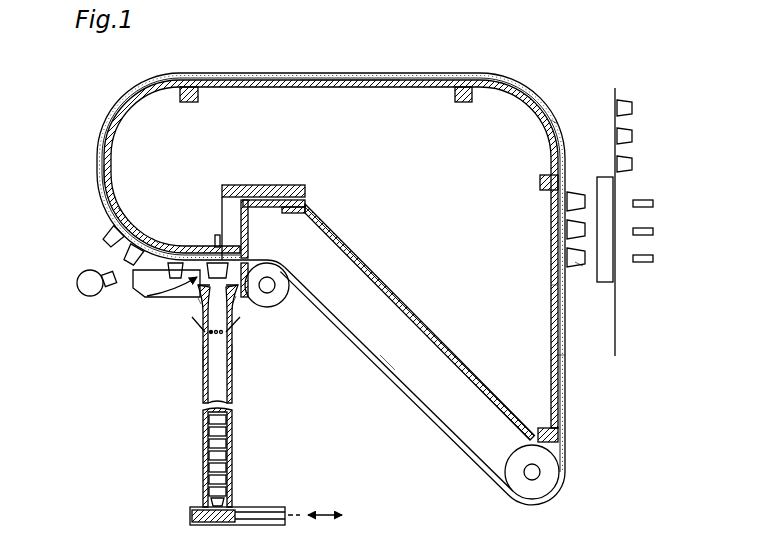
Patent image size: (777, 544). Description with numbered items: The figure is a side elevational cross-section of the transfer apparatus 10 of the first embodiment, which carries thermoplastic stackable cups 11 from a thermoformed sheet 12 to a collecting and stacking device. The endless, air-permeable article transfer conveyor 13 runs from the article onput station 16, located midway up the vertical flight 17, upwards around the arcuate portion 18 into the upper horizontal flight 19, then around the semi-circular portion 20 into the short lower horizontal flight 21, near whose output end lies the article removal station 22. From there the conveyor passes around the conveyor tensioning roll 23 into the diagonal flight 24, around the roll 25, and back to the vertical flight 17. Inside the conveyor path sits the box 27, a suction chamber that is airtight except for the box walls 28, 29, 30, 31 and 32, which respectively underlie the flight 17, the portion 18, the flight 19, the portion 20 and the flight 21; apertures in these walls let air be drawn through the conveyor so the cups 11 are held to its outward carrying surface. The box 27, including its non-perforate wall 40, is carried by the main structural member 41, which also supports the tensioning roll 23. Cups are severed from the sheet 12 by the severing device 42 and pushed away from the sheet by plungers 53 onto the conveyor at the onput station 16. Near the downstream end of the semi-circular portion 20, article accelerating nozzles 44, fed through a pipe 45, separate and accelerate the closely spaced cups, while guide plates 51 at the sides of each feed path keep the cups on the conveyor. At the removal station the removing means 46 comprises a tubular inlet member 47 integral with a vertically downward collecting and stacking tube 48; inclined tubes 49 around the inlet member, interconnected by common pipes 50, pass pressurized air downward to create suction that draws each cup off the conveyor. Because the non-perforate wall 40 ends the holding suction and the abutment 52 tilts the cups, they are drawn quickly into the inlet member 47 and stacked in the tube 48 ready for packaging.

The transfer apparatus 10 is at (539, 100).
The cups 11 is at (106, 237).
The sheet 12 is at (617, 91).
The article transfer conveyor 13 is at (547, 112).
The article onput station 16 is at (574, 270).
The vertical flight 17 is at (566, 358).
The arcuate portion 18 is at (561, 130).
The horizontal flight 19 is at (446, 72).
The semi-circular portion 20 is at (97, 176).
The lower horizontal flight 21 is at (160, 296).
The article removal station 22 is at (170, 302).
The conveyor tensioning roll 23 is at (276, 299).
The diagonal flight 24 is at (379, 361).
The roll 25 is at (546, 483).
The box 27 is at (439, 191).
The box wall 28 is at (551, 293).
The box wall 29 is at (525, 108).
The box wall 30 is at (445, 95).
The box wall 31 is at (122, 211).
The box wall 32 is at (155, 241).
The non-perforate wall 40 is at (228, 250).
The main structural member 41 is at (226, 211).
The severing device 42 is at (618, 193).
The article accelerating nozzles 44 is at (106, 272).
The pipe 45 is at (80, 283).
The removing means 46 is at (236, 383).
The tubular inlet member 47 is at (238, 298).
The collecting and stacking tube 48 is at (203, 382).
The tubes 49 is at (204, 375).
The common pipes 50 is at (194, 321).
The guide plates 51 is at (198, 298).
The abutment 52 is at (250, 264).
The plungers 53 is at (655, 205).